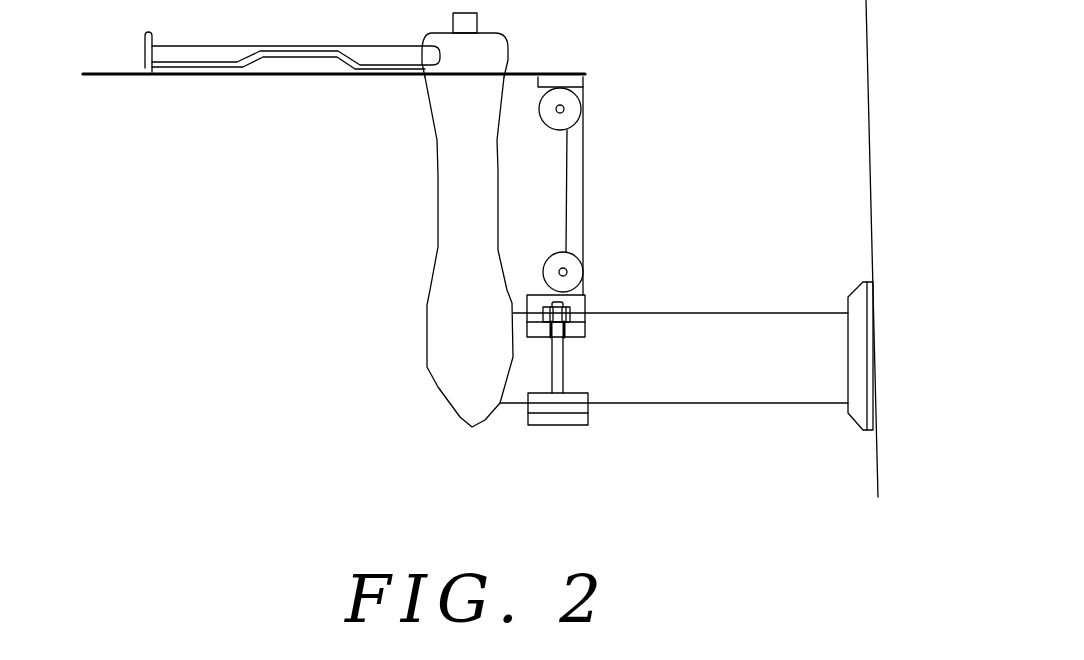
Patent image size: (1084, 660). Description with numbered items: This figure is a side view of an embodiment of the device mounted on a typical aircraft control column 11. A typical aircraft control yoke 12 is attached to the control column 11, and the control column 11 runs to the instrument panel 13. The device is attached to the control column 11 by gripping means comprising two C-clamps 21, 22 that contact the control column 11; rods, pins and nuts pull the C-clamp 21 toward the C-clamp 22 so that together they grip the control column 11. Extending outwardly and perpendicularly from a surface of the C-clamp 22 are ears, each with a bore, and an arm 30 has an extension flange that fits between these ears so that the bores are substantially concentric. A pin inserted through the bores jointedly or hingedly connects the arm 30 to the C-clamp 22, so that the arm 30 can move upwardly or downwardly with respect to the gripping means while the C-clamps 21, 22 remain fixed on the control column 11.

The control column 11 is at (767, 395).
The aircraft control yoke 12 is at (438, 210).
The instrument panel 13 is at (874, 211).
The C-clamp 21 is at (565, 425).
The C-clamp 22 is at (584, 300).
The arm 30 is at (580, 165).